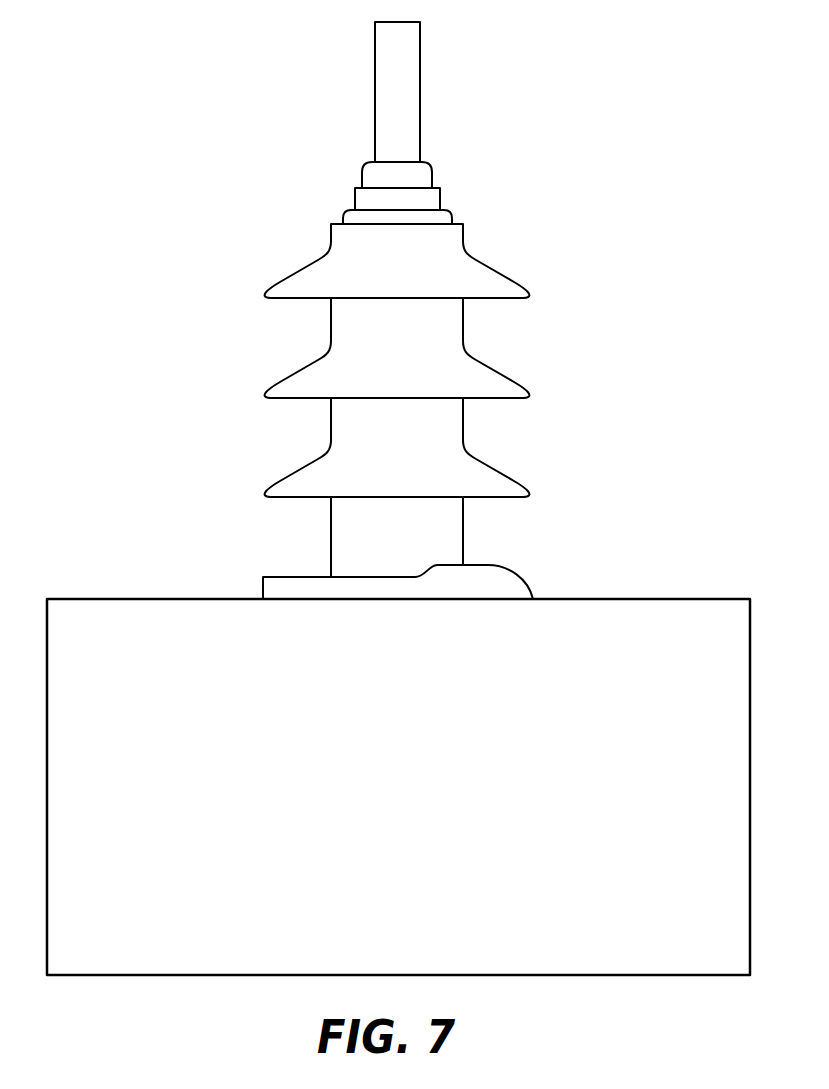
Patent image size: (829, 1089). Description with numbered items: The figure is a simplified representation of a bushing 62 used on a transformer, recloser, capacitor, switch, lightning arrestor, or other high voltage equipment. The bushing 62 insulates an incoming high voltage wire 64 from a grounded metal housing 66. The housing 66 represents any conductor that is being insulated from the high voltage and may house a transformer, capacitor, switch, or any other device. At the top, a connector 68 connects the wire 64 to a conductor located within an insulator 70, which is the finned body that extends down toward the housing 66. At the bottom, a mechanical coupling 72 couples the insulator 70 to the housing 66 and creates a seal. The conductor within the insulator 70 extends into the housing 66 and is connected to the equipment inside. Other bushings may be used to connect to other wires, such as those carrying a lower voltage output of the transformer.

The bushing 62 is at (587, 414).
The high voltage wire 64 is at (420, 63).
The housing 66 is at (640, 598).
The connector 68 is at (432, 178).
The insulator 70 is at (297, 268).
The mechanical coupling 72 is at (297, 576).